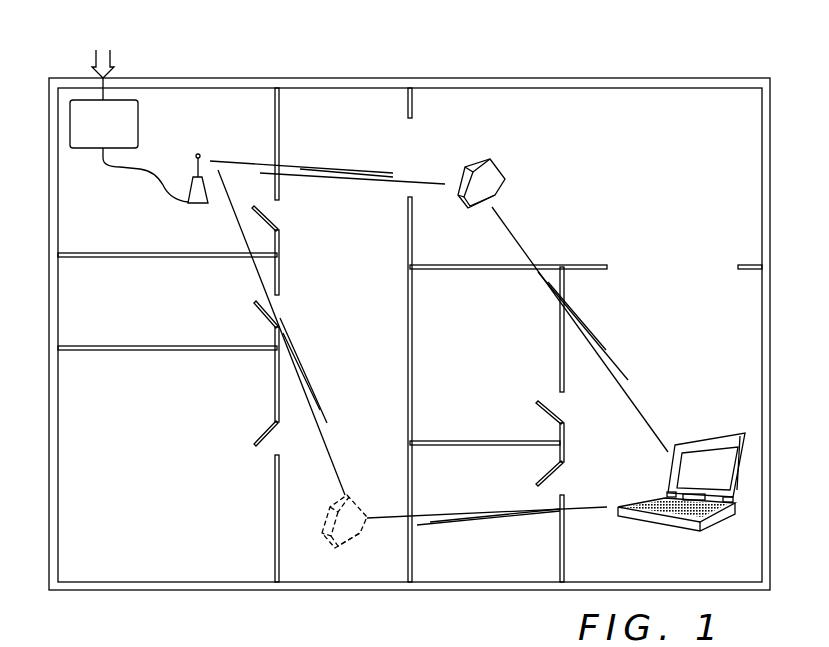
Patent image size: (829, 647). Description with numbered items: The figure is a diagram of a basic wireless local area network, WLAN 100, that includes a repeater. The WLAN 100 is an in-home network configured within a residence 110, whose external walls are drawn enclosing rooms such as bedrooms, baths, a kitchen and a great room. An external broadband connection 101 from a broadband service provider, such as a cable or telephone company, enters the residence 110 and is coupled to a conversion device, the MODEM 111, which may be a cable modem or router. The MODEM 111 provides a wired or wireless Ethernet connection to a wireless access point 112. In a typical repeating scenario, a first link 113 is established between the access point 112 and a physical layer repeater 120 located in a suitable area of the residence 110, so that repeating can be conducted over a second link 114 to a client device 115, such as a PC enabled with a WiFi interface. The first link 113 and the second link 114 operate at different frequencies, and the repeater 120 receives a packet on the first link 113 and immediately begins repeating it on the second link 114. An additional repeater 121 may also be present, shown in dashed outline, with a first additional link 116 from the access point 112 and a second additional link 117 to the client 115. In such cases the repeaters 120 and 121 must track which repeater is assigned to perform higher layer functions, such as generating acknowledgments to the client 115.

The wireless local area network 100 is at (516, 65).
The broadband connection 101 is at (110, 62).
The residence 110 is at (655, 78).
The modem 111 is at (138, 124).
The wireless access point 112 is at (200, 154).
The first link 113 is at (343, 169).
The second link 114 is at (603, 347).
The client device 115 is at (680, 480).
The first additional link 116 is at (297, 343).
The second additional link 117 is at (487, 520).
The physical layer repeater 120 is at (505, 179).
The additional repeater 121 is at (348, 533).